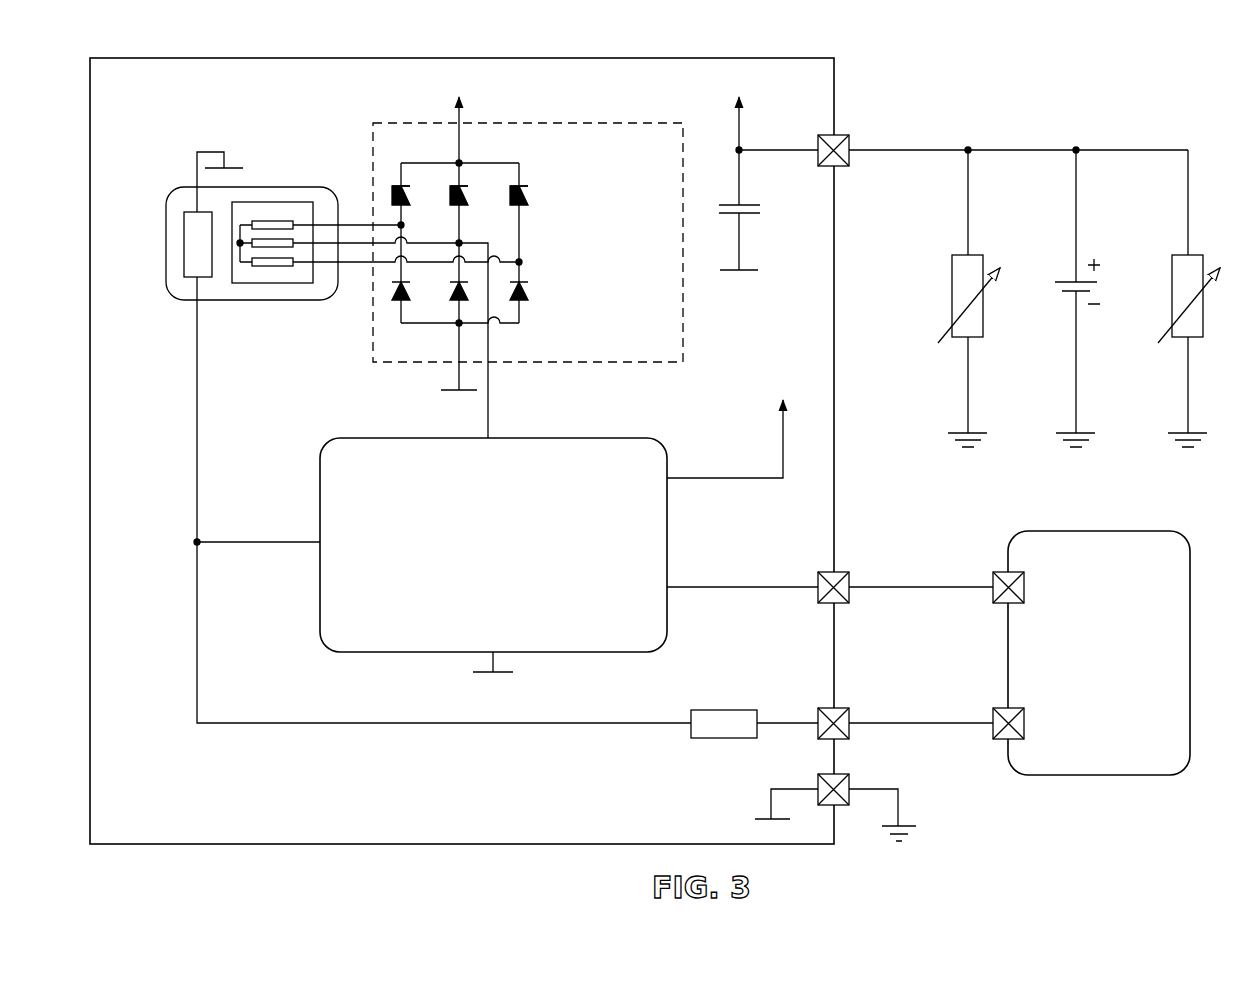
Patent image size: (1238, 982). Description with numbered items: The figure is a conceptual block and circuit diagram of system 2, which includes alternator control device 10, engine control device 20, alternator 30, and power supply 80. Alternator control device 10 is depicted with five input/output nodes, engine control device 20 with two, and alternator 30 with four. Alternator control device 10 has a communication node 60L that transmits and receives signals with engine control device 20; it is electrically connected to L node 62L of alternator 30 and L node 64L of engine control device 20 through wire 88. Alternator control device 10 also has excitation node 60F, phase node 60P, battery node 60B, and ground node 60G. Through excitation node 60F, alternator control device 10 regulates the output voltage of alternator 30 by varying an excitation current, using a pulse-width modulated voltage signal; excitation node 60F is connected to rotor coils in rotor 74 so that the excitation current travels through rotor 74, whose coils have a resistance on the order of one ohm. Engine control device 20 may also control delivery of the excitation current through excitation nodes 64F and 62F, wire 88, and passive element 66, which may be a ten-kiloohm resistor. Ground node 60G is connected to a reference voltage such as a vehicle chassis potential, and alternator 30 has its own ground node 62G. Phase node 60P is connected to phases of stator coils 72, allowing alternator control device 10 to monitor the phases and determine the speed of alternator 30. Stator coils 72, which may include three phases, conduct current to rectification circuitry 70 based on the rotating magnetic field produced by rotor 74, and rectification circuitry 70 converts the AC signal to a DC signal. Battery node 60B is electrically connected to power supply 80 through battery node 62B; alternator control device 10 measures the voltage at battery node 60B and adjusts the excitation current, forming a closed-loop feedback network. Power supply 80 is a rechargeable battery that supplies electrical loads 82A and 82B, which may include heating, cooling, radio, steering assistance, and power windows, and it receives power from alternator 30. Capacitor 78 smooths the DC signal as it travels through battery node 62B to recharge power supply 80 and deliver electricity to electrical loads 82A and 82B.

The system 2 is at (1060, 63).
The alternator control device 10 is at (493, 545).
The engine control device 20 is at (1099, 653).
The alternator 30 is at (462, 451).
The phase node 60P is at (522, 422).
The battery node 60B is at (682, 462).
The excitation node 60F is at (305, 525).
The communication (L) node 60L is at (690, 568).
The ground node 60G is at (452, 663).
The battery node of alternator 62B is at (845, 134).
The L node of alternator 62L is at (822, 603).
The excitation node of alternator 62F is at (825, 708).
The ground node of alternator 62G is at (845, 776).
The L node of engine control device 64L is at (997, 572).
The excitation node of engine control device 64F is at (997, 708).
The passive element 66 is at (722, 740).
The rectification circuitry 70 is at (528, 229).
The stator coils 72 is at (262, 202).
The rotor 74 is at (184, 243).
The capacitor 78 is at (750, 215).
The power supply 80 is at (1056, 310).
The electrical load 82A is at (947, 242).
The electrical load 82B is at (1162, 357).
The wire 88 is at (900, 540).